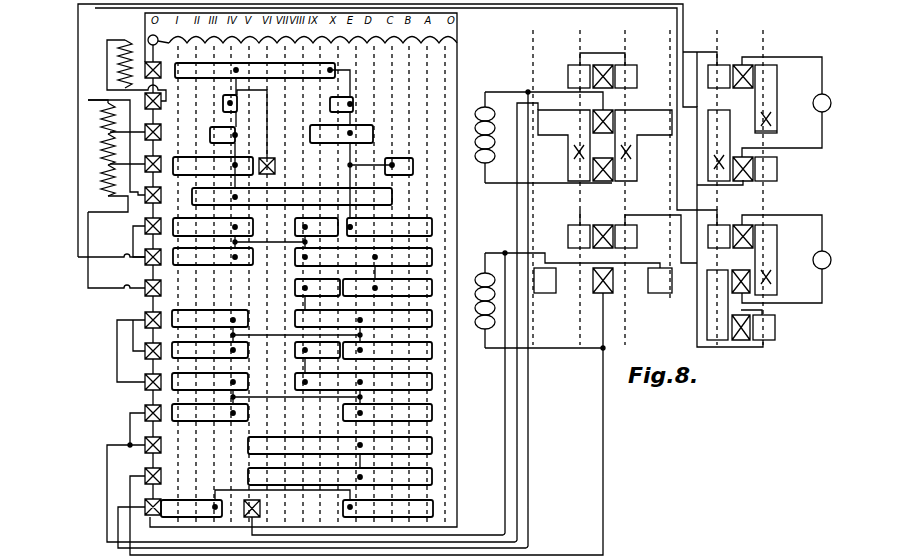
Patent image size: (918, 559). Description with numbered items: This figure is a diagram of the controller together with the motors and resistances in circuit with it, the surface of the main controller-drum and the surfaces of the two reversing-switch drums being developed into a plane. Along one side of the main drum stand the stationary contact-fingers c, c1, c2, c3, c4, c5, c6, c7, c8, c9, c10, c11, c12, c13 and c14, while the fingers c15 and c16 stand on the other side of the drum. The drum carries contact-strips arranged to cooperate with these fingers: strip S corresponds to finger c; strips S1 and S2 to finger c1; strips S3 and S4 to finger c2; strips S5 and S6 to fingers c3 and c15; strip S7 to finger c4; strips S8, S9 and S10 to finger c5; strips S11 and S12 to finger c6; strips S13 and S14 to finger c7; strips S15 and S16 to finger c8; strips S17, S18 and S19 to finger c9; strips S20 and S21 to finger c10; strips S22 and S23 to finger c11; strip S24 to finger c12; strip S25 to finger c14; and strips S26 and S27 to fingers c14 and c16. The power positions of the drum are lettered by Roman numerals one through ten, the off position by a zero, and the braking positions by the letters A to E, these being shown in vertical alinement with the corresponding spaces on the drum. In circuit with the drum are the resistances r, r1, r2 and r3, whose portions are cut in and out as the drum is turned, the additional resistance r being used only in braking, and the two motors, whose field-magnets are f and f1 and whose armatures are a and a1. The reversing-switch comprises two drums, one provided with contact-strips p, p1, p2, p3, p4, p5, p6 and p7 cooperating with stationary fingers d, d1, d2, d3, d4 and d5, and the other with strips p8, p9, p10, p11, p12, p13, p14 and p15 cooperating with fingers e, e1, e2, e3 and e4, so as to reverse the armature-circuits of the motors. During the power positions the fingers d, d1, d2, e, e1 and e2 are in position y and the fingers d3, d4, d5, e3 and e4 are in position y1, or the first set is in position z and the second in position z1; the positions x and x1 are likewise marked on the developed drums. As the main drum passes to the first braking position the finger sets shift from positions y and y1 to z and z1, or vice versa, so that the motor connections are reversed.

The contact-finger c is at (144, 62).
The contact-finger c1 is at (144, 96).
The contact-finger c2 is at (144, 127).
The contact-finger c3 is at (144, 159).
The contact-finger c4 is at (144, 190).
The contact-finger c5 is at (144, 221).
The contact-finger c6 is at (144, 252).
The contact-finger c7 is at (144, 283).
The contact-finger c8 is at (144, 315).
The contact-finger c9 is at (144, 346).
The contact-finger c10 is at (144, 377).
The contact-finger c11 is at (144, 408).
The contact-finger c12 is at (144, 440).
The contact-finger c13 is at (144, 471).
The contact-finger c14 is at (144, 502).
The contact-finger c15 is at (276, 166).
The contact-finger c16 is at (261, 508).
The contact-strip S is at (255, 70).
The contact-strip S1 is at (223, 103).
The contact-strip S2 is at (341, 104).
The contact-strip S3 is at (223, 135).
The contact-strip S4 is at (341, 134).
The contact-strip S5 is at (213, 166).
The contact-strip S6 is at (399, 166).
The contact-strip S7 is at (292, 196).
The contact-strip S8 is at (213, 227).
The contact-strip S9 is at (316, 227).
The contact-strip S10 is at (389, 227).
The contact-strip S11 is at (213, 256).
The contact-strip S12 is at (363, 257).
The contact-strip S13 is at (317, 287).
The contact-strip S14 is at (387, 287).
The contact-strip S15 is at (210, 318).
The contact-strip S16 is at (363, 318).
The contact-strip S17 is at (210, 350).
The contact-strip S18 is at (317, 350).
The contact-strip S19 is at (387, 350).
The contact-strip S20 is at (210, 381).
The contact-strip S21 is at (363, 381).
The contact-strip S22 is at (210, 412).
The contact-strip S23 is at (387, 412).
The contact-strip S24 is at (340, 445).
The contact-strip S25 is at (340, 476).
The contact-strip S26 is at (191, 508).
The contact-strip S27 is at (388, 508).
The resistance r is at (136, 62).
The resistance r1 is at (108, 188).
The resistance r2 is at (116, 117).
The resistance r3 is at (117, 149).
The contact-strip p is at (579, 76).
The contact-strip p1 is at (626, 76).
The contact-strip p2 is at (719, 76).
The contact-strip p3 is at (766, 99).
The contact-strip p4 is at (564, 145).
The contact-strip p5 is at (643, 145).
The contact-strip p6 is at (719, 145).
The contact-strip p7 is at (766, 169).
The contact-strip p8 is at (579, 236).
The contact-strip p9 is at (626, 236).
The contact-strip p10 is at (719, 236).
The contact-strip p11 is at (766, 260).
The contact-strip p12 is at (545, 280).
The contact-strip p13 is at (660, 280).
The contact-strip p14 is at (717, 305).
The contact-strip p15 is at (764, 327).
The contact-finger d is at (742, 66).
The contact-finger d1 is at (766, 134).
The contact-finger d2 is at (743, 182).
The contact-finger d3 is at (603, 65).
The contact-finger d4 is at (609, 112).
The contact-finger d5 is at (610, 182).
The contact-finger e is at (742, 225).
The contact-finger e1 is at (766, 295).
The contact-finger e2 is at (742, 341).
The contact-finger e3 is at (603, 225).
The contact-finger e4 is at (606, 293).
The armature a is at (793, 107).
The armature a1 is at (795, 259).
The field-magnet f is at (479, 137).
The field-magnet f1 is at (478, 300).
The reversing-switch position x is at (669, 158).
The reversing-switch position x1 is at (540, 180).
The reversing-switch position y is at (761, 180).
The reversing-switch position y1 is at (624, 180).
The reversing-switch position z is at (715, 180).
The reversing-switch position z1 is at (580, 180).